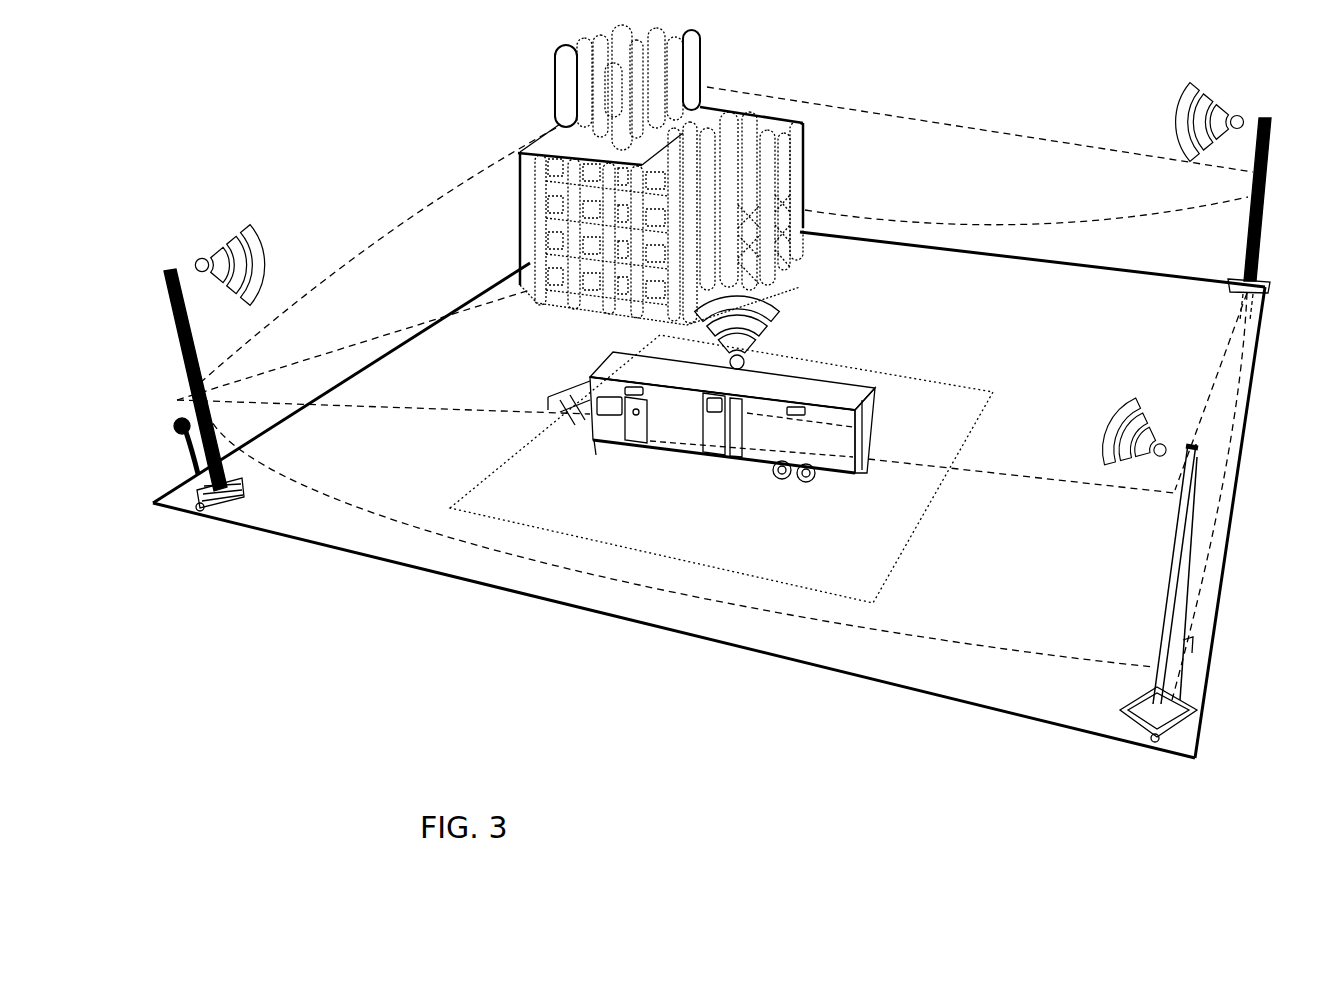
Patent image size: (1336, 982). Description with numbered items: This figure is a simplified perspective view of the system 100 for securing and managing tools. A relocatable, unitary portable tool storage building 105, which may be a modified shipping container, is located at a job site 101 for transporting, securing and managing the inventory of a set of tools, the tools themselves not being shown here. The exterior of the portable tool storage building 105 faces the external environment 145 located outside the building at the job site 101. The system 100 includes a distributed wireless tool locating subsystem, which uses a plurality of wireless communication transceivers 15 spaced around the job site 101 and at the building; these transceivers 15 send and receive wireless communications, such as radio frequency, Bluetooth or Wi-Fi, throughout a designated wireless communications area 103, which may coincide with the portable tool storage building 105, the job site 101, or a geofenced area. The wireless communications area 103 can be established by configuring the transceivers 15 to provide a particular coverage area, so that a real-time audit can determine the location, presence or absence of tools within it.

The system for securing and managing tools 100 is at (862, 845).
The job site 101 is at (905, 304).
The wireless communications area 103 is at (930, 118).
The portable tool storage building 105 is at (800, 400).
The external environment 145 is at (845, 539).
The wireless communication transceiver 15 is at (1305, 119).